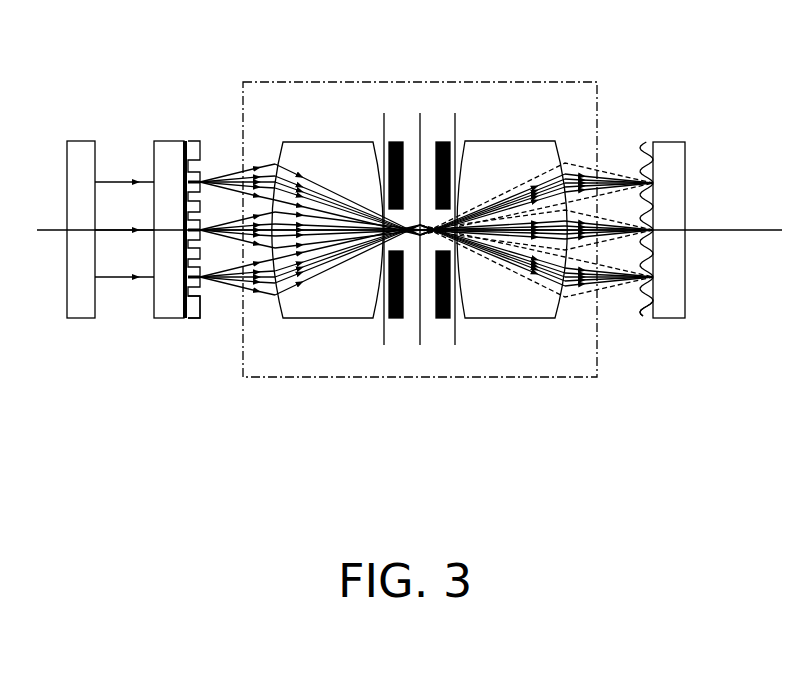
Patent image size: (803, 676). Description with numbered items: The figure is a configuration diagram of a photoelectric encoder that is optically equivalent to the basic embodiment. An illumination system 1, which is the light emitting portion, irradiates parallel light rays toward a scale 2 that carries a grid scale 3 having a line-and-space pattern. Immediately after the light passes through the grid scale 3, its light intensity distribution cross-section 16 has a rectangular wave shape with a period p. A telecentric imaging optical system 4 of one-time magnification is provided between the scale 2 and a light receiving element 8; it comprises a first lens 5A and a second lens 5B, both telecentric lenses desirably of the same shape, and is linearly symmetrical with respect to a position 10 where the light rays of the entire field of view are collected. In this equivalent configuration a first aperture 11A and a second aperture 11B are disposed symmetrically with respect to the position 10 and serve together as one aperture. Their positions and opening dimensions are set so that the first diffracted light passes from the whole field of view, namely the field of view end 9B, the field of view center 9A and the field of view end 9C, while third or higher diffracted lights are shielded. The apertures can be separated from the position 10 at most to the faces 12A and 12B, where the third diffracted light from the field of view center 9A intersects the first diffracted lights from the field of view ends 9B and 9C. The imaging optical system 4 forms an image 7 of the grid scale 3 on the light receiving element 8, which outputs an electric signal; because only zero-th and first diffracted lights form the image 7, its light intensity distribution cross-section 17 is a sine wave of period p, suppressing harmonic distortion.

The illumination system 1 is at (67, 141).
The scale 2 is at (154, 141).
The grid scale 3 is at (188, 146).
The imaging optical system 4 is at (273, 82).
The first lens 5A is at (340, 160).
The second lens 5B is at (503, 152).
The image 7 is at (645, 142).
The light receiving element 8 is at (686, 142).
The field of view center 9A is at (198, 229).
The field of view end 9B is at (198, 181).
The field of view end 9C is at (198, 277).
The position where light rays in an entire field of view are collected 10 is at (420, 345).
The first aperture 11A is at (398, 142).
The second aperture 11B is at (446, 142).
The face 12A is at (384, 345).
The face 12B is at (455, 345).
The light intensity distribution cross-section 16 is at (199, 311).
The light intensity distribution cross-section 17 is at (644, 308).